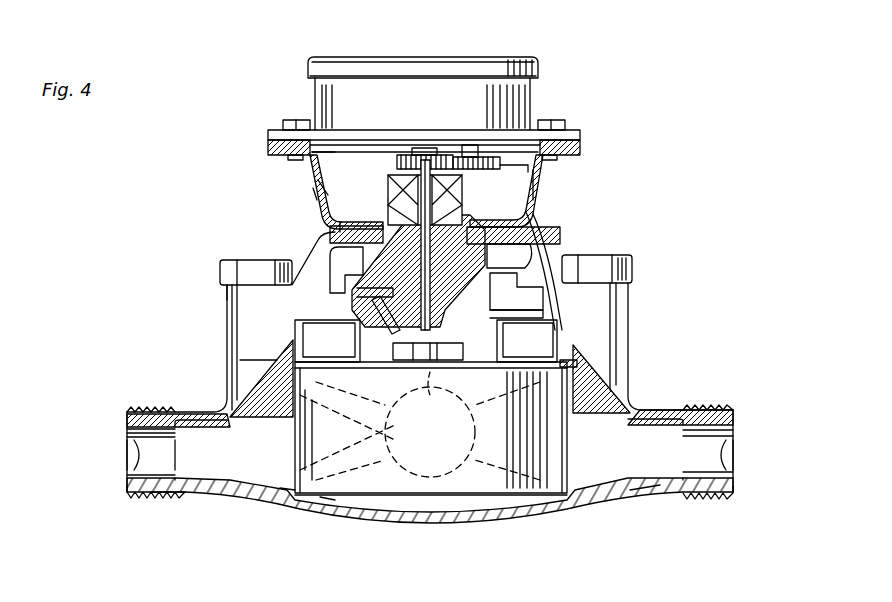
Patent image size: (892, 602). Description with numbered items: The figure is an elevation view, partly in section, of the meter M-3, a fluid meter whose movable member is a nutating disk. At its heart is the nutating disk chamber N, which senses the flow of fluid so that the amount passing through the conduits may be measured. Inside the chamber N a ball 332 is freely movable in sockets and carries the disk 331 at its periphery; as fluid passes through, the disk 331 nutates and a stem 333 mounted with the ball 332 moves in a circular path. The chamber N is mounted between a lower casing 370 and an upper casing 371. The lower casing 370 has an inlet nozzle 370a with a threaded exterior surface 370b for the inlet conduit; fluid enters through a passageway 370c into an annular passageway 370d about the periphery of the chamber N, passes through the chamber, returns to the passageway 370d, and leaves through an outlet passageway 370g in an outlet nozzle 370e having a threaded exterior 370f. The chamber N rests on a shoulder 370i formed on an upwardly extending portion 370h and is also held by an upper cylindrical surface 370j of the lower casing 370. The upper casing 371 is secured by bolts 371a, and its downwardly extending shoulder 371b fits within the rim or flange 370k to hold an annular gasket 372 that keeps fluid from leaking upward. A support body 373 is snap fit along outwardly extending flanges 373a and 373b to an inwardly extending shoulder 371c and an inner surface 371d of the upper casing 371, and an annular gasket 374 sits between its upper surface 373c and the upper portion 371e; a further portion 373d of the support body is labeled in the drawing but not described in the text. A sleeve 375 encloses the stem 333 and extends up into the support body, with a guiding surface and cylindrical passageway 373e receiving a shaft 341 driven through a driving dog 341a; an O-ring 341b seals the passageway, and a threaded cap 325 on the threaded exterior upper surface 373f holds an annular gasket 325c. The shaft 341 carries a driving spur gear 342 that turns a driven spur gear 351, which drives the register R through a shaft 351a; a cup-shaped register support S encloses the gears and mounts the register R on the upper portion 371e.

The register R is at (421, 88).
The register support S is at (312, 190).
The nutating disk chamber N is at (447, 487).
The meter M-3 is at (156, 230).
The threaded cap 325 is at (398, 192).
The annular gasket 325c is at (325, 192).
The disk 331 is at (453, 428).
The ball 332 is at (410, 473).
The stem 333 is at (365, 335).
The shaft 341 is at (440, 226).
The driving dog 341a is at (430, 372).
The O-ring 341b is at (543, 292).
The driving spur gear 342 is at (398, 160).
The driven spur gear 351 is at (490, 157).
The shaft 351a is at (530, 174).
The lower casing 370 is at (292, 507).
The inlet nozzle 370a is at (187, 495).
The threaded exterior surface 370b is at (143, 500).
The passageway 370c is at (143, 477).
The annular passageway 370d is at (272, 455).
The outlet nozzle 370e is at (643, 488).
The threaded exterior 370f is at (713, 493).
The outlet passageway 370g is at (710, 476).
The upwardly extending portion 370h is at (287, 488).
The shoulder 370i is at (327, 498).
The upper cylindrical surface 370j is at (572, 388).
The rim or flange 370k is at (277, 358).
The upper casing 371 is at (630, 288).
The bolts 371a is at (625, 266).
The downwardly extending shoulder 371b is at (282, 345).
The inwardly extending shoulder 371c is at (332, 283).
The inner surface 371d is at (300, 303).
The upper portion 371e is at (357, 237).
The annular gasket 372 is at (575, 348).
The support body 373 is at (565, 251).
The outwardly extending flange 373a is at (333, 253).
The outwardly extending flange 373b is at (293, 330).
The upper surface 373c is at (520, 245).
The cover step 373d is at (543, 312).
The cylindrical passageway 373e is at (407, 224).
The threaded exterior upper surface 373f is at (535, 196).
The annular gasket 374 is at (500, 226).
The sleeve 375 is at (500, 338).